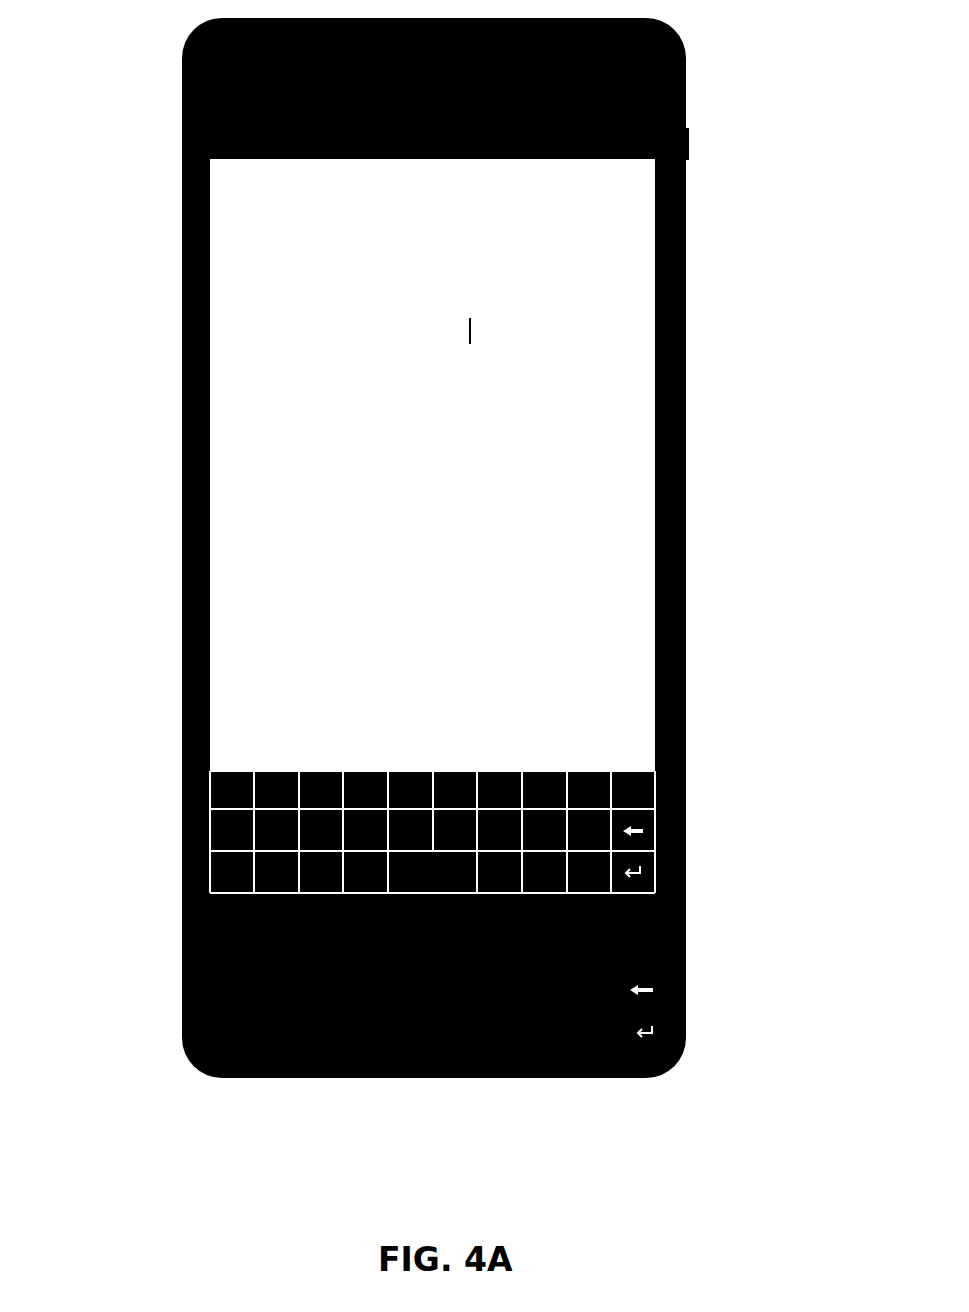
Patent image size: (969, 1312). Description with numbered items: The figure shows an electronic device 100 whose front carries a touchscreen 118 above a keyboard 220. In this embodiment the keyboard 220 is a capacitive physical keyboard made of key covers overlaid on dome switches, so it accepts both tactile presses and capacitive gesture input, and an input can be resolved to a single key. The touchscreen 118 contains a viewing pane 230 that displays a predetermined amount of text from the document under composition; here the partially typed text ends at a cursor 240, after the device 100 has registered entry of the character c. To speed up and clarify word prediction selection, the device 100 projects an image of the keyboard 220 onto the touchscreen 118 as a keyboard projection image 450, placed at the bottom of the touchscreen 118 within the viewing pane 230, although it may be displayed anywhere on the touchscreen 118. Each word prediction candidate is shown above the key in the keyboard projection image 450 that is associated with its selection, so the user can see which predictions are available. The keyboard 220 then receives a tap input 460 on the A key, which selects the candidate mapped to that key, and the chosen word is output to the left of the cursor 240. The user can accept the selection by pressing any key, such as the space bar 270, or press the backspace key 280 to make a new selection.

The electronic device 100 is at (367, 548).
The touchscreen 118 is at (370, 464).
The viewing pane 230 is at (371, 464).
The cursor 240 is at (624, 325).
The keyboard projection image 450 is at (364, 831).
The keyboard 220 is at (448, 1045).
The tap input 460 is at (146, 992).
The backspace key 280 is at (730, 972).
The space bar 270 is at (439, 1094).